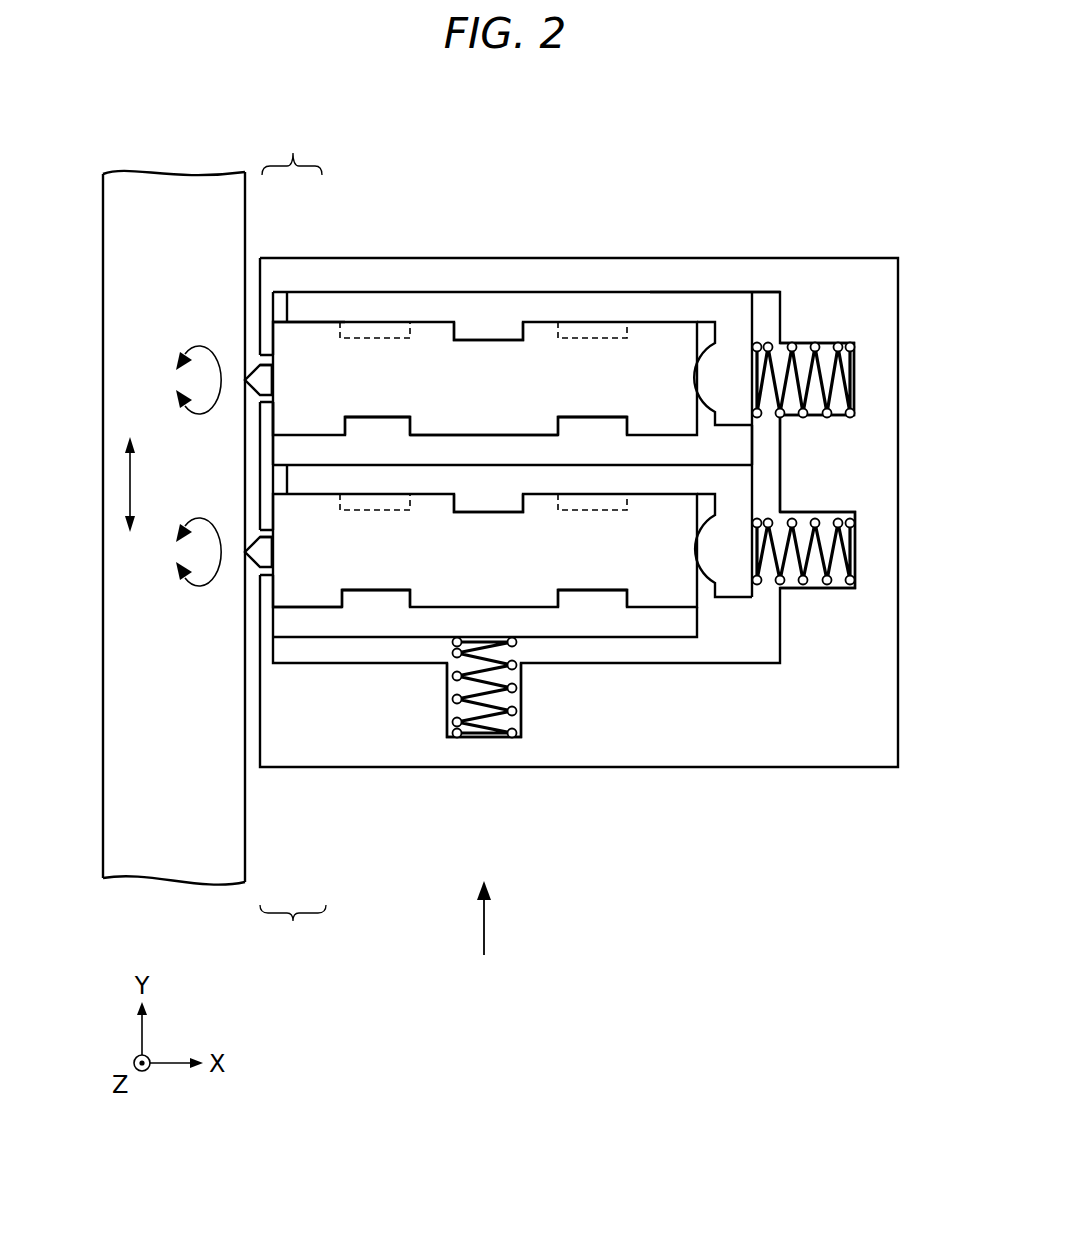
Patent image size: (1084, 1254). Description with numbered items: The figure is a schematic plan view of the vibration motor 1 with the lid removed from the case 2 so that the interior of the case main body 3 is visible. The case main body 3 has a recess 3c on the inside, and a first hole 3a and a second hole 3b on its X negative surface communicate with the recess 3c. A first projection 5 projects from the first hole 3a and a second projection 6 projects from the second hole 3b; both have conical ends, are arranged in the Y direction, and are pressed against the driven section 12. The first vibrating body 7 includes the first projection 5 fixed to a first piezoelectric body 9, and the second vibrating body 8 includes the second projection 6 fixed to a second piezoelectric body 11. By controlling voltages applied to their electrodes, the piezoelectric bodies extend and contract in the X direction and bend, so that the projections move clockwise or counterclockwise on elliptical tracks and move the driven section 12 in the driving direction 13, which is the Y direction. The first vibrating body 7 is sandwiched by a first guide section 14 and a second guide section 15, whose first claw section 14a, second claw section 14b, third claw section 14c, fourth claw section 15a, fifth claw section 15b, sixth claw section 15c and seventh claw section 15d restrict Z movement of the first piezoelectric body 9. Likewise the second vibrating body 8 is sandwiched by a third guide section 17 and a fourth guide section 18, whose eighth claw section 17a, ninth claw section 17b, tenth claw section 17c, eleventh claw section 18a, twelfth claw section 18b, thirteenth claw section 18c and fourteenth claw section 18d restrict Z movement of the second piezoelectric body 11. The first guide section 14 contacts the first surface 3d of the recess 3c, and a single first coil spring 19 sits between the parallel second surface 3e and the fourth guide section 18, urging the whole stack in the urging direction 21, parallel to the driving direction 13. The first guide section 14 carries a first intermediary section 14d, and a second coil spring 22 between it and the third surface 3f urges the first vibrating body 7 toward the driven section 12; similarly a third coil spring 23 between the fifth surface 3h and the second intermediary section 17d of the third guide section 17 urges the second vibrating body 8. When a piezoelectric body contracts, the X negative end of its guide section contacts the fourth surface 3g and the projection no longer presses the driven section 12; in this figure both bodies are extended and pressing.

The vibration motor 1 is at (872, 138).
The case 2 is at (782, 747).
The case main body 3 is at (564, 564).
The first hole 3a is at (257, 397).
The second hole 3b is at (258, 533).
The recess 3c is at (763, 452).
The first surface 3d is at (727, 300).
The second surface 3e is at (507, 725).
The third surface 3f is at (825, 360).
The fourth surface 3g is at (273, 416).
The fifth surface 3h is at (840, 573).
The first projection 5 is at (265, 372).
The second projection 6 is at (262, 560).
The first vibrating body 7 is at (292, 150).
The second vibrating body 8 is at (293, 930).
The first piezoelectric body 9 is at (315, 330).
The second piezoelectric body 11 is at (315, 583).
The driven section 12 is at (118, 206).
The driving direction 13 is at (130, 481).
The first guide section 14 is at (541, 320).
The first claw section 14a is at (496, 333).
The second claw section 14b is at (380, 322).
The third claw section 14c is at (598, 322).
The first intermediary section 14d is at (728, 367).
The second guide section 15 is at (487, 445).
The fourth claw section 15a is at (385, 422).
The fifth claw section 15b is at (600, 425).
The sixth claw section 15c is at (398, 390).
The seventh claw section 15d is at (616, 390).
The third guide section 17 is at (514, 650).
The eighth claw section 17a is at (490, 505).
The ninth claw section 17b is at (375, 505).
The tenth claw section 17c is at (600, 505).
The second intermediary section 17d is at (730, 560).
The fourth guide section 18 is at (680, 627).
The eleventh claw section 18a is at (372, 600).
The twelfth claw section 18b is at (600, 595).
The thirteenth claw section 18c is at (386, 713).
The fourteenth claw section 18d is at (604, 713).
The first coil spring 19 is at (468, 695).
The urging direction 21 is at (484, 922).
The second coil spring 22 is at (805, 395).
The third coil spring 23 is at (812, 535).